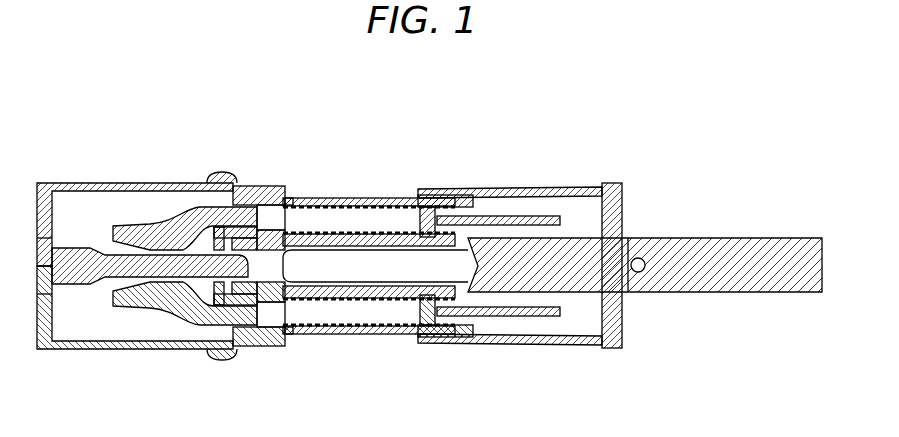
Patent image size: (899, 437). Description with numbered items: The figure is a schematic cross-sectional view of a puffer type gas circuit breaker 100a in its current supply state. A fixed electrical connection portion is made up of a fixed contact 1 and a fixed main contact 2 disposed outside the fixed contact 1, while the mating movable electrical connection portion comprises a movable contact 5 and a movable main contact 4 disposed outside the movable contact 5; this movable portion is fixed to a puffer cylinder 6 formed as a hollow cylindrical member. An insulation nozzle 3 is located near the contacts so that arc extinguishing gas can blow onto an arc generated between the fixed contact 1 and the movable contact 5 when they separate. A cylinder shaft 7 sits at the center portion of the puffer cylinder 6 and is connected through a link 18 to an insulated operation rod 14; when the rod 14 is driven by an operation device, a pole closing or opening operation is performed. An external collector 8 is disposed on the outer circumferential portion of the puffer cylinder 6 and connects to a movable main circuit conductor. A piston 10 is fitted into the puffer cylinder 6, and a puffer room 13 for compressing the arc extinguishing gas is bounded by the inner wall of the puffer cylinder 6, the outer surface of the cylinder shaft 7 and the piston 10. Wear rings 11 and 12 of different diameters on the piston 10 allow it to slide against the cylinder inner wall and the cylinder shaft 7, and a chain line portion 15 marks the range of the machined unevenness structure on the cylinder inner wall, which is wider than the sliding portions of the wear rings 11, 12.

The puffer type gas circuit breaker 100a is at (412, 95).
The fixed contact 1 is at (138, 305).
The fixed main contact 2 is at (126, 190).
The insulation nozzle 3 is at (163, 295).
The movable main contact 4 is at (250, 186).
The movable contact 5 is at (243, 300).
The puffer cylinder 6 is at (323, 198).
The cylinder shaft 7 is at (371, 300).
The external collector 8 is at (584, 189).
The piston 10 is at (524, 216).
The wear ring 11 is at (447, 237).
The wear ring 12 is at (440, 300).
The puffer room 13 is at (322, 320).
The insulated operation rod 14 is at (733, 250).
The range of unevenness structure 15 is at (393, 232).
The link 18 is at (641, 262).